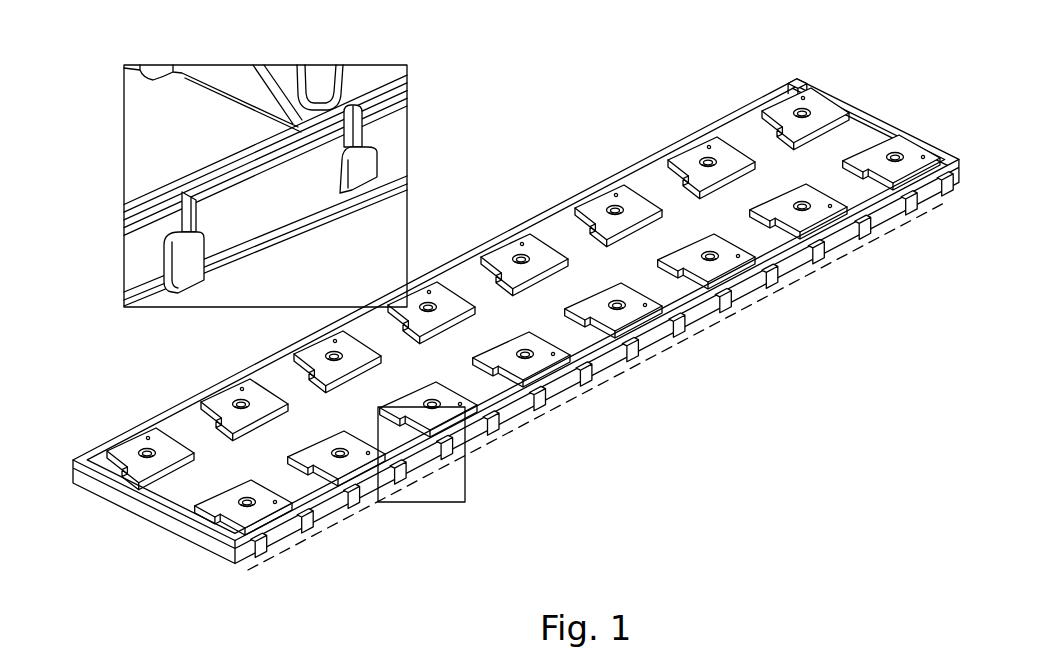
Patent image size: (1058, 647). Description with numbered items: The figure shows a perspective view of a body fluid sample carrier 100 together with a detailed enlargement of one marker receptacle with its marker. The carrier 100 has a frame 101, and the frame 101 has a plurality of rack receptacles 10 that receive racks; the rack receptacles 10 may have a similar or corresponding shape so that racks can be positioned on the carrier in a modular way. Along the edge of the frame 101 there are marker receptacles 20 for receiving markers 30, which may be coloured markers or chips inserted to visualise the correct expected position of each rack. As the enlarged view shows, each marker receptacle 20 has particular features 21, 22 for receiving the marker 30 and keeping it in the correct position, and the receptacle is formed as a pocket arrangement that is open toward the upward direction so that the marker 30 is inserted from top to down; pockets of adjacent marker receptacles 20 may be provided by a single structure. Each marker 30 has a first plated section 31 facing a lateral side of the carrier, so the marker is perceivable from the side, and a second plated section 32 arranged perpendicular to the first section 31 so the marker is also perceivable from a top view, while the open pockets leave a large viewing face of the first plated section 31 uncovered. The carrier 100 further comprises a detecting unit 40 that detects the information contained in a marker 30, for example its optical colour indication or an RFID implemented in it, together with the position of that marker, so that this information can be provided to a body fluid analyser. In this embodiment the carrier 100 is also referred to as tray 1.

The body fluid sample carrier 100 is at (648, 150).
The tray 1 is at (885, 230).
The frame 101 is at (387, 108).
The rack receptacle 10 is at (215, 128).
The marker receptacle 20 is at (504, 372).
The feature of the marker receptacle 21 is at (380, 150).
The feature of the marker receptacle 22 is at (330, 177).
The marker 30 is at (415, 478).
The first plated section 31 is at (287, 183).
The second plated section 32 is at (195, 177).
The detecting unit 40 is at (843, 250).